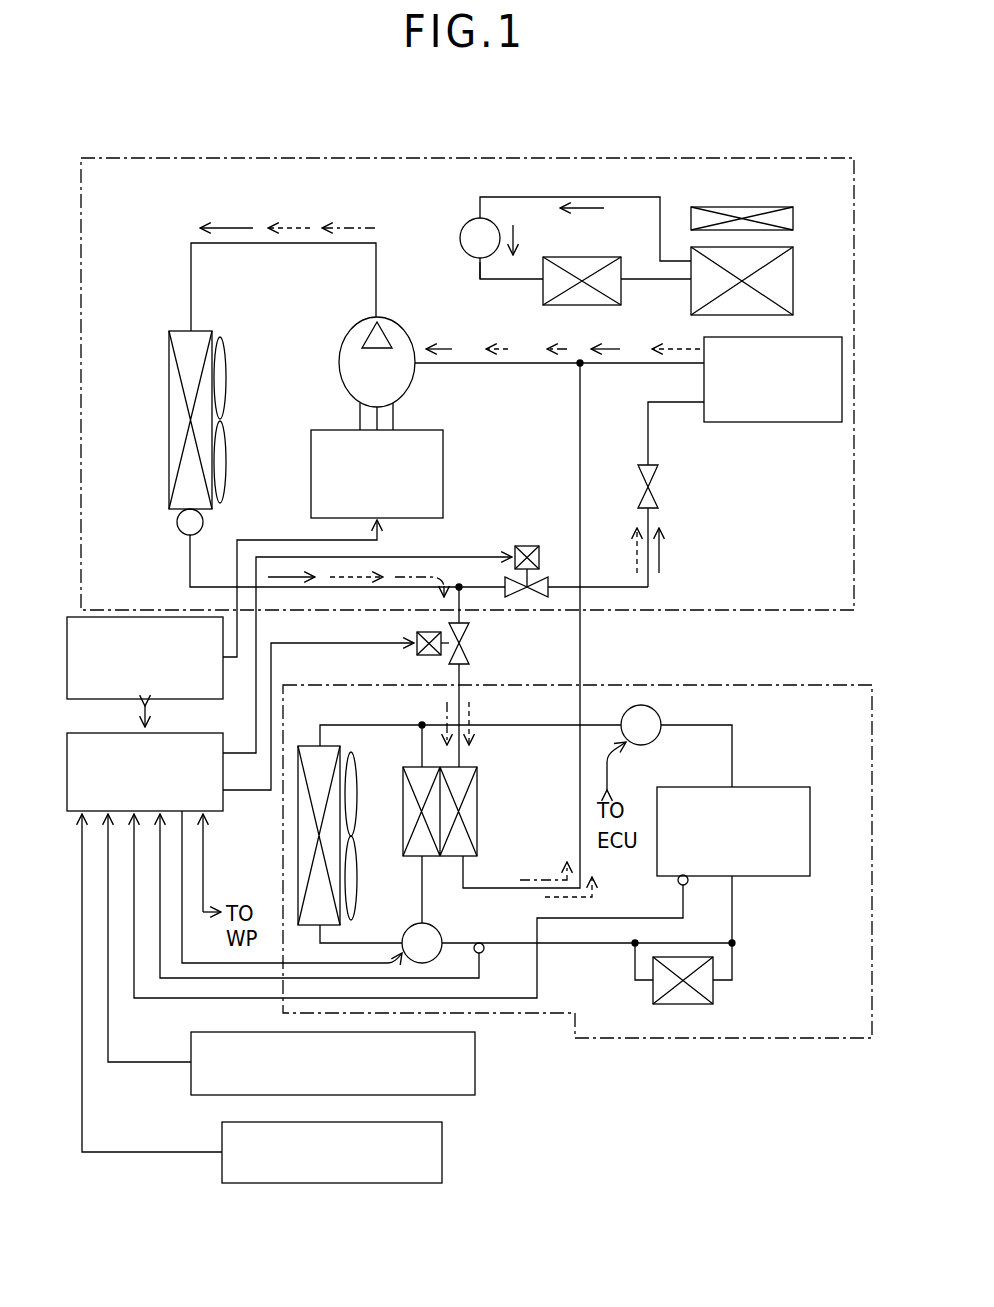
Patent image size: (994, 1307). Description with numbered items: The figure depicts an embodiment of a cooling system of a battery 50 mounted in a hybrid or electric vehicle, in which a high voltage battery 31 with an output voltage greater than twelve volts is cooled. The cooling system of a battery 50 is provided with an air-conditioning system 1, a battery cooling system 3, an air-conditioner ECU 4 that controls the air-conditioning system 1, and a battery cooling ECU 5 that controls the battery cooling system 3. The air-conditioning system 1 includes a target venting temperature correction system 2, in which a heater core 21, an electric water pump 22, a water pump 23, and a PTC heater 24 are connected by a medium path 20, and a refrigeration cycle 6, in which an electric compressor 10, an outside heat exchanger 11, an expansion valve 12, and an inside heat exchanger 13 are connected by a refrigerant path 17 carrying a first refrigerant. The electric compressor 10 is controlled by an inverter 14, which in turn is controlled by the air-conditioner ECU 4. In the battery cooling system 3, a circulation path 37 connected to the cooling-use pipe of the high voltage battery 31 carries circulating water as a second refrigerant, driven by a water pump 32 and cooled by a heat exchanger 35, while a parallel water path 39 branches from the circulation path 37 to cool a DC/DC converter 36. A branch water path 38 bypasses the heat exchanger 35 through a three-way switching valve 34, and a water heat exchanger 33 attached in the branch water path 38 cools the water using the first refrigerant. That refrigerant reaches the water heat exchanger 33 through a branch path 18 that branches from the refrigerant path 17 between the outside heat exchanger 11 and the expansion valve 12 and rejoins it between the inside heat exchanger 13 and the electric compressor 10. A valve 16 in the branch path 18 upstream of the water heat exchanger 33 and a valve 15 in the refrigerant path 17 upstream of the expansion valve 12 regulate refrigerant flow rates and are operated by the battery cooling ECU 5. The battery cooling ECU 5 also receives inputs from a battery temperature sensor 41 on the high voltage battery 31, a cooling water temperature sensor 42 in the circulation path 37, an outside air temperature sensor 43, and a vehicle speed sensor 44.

The cooling system of a battery 50 is at (458, 152).
The air-conditioning system 1 is at (648, 158).
The target venting temperature correction system 2 is at (442, 216).
The battery cooling system 3 is at (762, 685).
The air-conditioner ECU 4 is at (178, 700).
The battery cooling ECU 5 is at (220, 812).
The refrigeration cycle 6 is at (776, 522).
The electric compressor 10 is at (352, 336).
The outside heat exchanger 11 is at (195, 331).
The expansion valve 12 is at (655, 486).
The inside heat exchanger 13 is at (778, 422).
The inverter 14 is at (311, 475).
The valve 15 is at (522, 546).
The valve 16 is at (424, 655).
The refrigerant path 17 is at (190, 575).
The branch path 18 is at (459, 680).
The medium path 20 is at (480, 262).
The heater core 21 is at (793, 280).
The electric water pump 22 is at (583, 257).
The water pump 23 is at (460, 238).
The PTC heater 24 is at (793, 218).
The high voltage battery 31 is at (810, 830).
The water pump 32 is at (656, 740).
The water heat exchanger 33 is at (477, 811).
The three-way switching valve 34 is at (410, 925).
The heat exchanger 35 is at (316, 746).
The DC/DC converter 36 is at (653, 988).
The circulation path 37 is at (396, 725).
The branch water path 38 is at (418, 760).
The parallel water path 39 is at (732, 965).
The battery temperature sensor 41 is at (680, 884).
The cooling water temperature sensor 42 is at (482, 953).
The outside air temperature sensor 43 is at (475, 1060).
The vehicle speed sensor 44 is at (442, 1143).